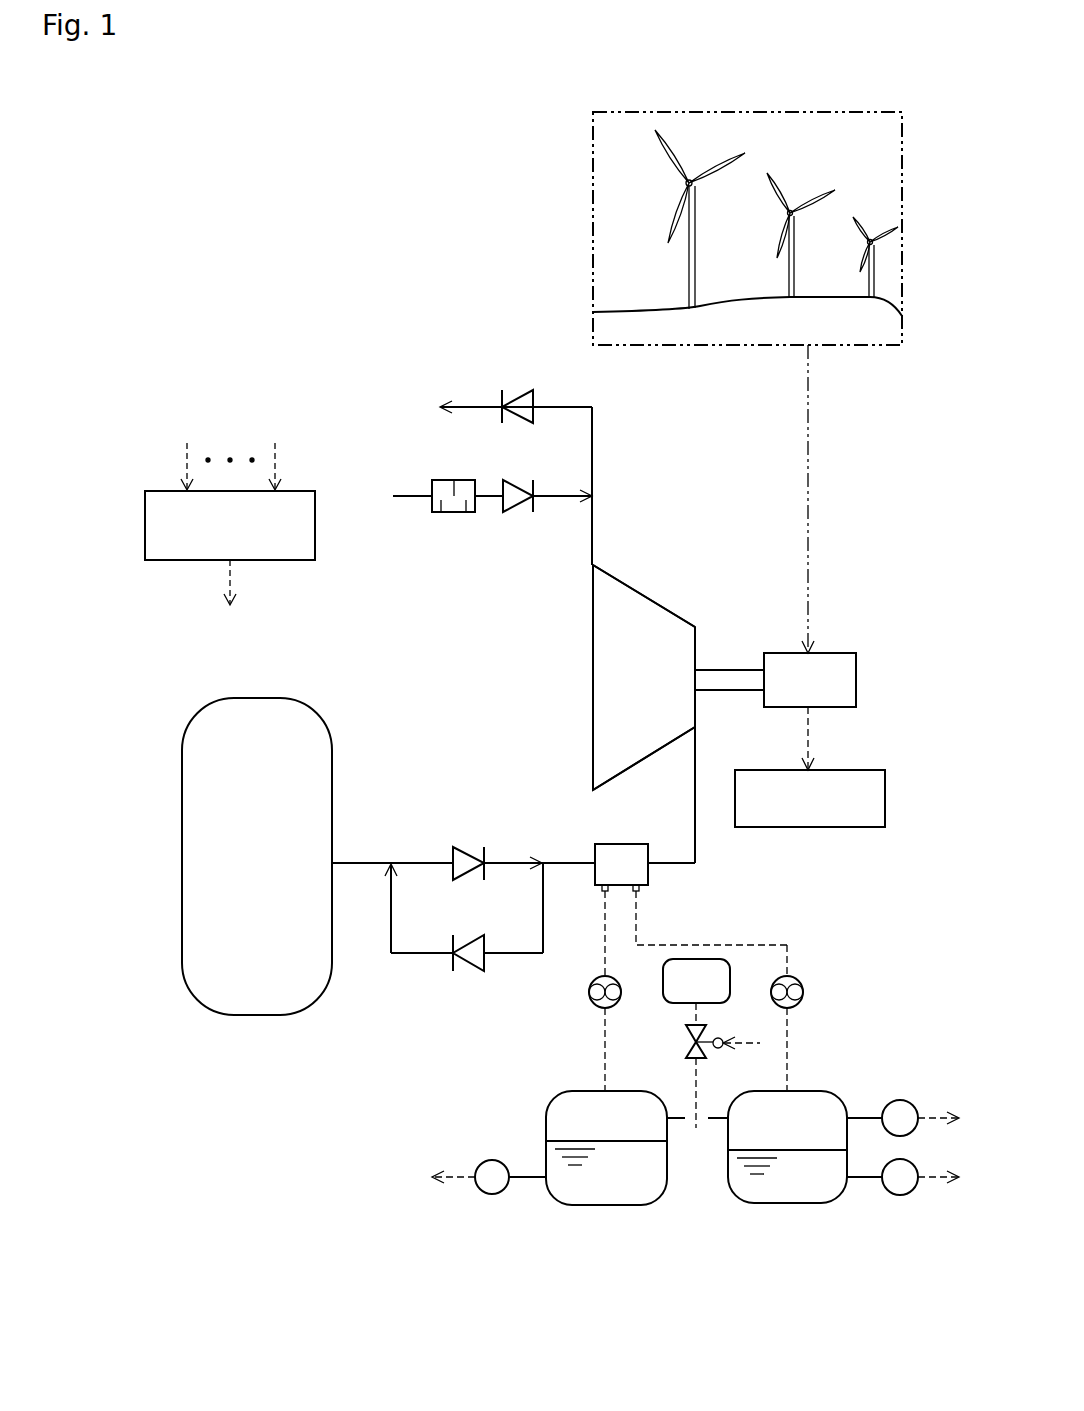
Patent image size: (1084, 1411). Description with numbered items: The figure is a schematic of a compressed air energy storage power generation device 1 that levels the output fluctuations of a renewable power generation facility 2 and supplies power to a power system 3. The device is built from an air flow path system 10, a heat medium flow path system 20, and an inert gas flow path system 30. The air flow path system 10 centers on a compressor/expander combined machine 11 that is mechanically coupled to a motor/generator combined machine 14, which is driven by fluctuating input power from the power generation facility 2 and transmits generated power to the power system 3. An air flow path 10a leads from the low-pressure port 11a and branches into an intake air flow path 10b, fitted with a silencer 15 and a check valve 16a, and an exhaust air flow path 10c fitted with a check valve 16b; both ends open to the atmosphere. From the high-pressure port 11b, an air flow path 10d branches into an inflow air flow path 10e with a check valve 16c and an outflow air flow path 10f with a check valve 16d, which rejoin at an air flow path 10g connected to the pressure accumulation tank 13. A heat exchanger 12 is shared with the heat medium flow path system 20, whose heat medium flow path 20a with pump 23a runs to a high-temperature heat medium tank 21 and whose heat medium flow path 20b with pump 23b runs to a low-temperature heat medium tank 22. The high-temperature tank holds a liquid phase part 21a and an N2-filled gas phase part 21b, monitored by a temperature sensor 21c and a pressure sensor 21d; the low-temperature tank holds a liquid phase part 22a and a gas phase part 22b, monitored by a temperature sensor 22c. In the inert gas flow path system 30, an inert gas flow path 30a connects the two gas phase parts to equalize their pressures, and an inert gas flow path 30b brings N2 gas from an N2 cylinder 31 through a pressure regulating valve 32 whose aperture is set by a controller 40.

The compressed air energy storage power generation device 1 is at (290, 330).
The power generation facility 2 is at (592, 178).
The power system 3 is at (810, 828).
The air flow path system 10 is at (627, 479).
The air flow path 10a is at (592, 525).
The air flow path for intake 10b is at (408, 510).
The air flow path for exhaust 10c is at (455, 405).
The air flow path 10d is at (695, 852).
The air flow path 10e is at (512, 863).
The air flow path 10f is at (394, 953).
The air flow path 10g is at (372, 863).
The compressor/expander combined machine 11 is at (593, 695).
The low-pressure port 11a is at (593, 565).
The high-pressure port 11b is at (695, 727).
The heat exchanger 12 is at (620, 844).
The pressure accumulation tank 13 is at (250, 1015).
The motor/generator combined machine 14 is at (856, 665).
The silencer 15 is at (432, 482).
The check valve 16a is at (512, 482).
The check valve 16b is at (513, 392).
The check valve 16c is at (448, 848).
The check valve 16d is at (484, 960).
The heat medium flow path system 20 is at (808, 1027).
The heat medium flow path 20a is at (790, 1050).
The heat medium flow path 20b is at (603, 1070).
The high-temperature heat medium tank 21 is at (838, 1200).
The liquid phase part 21a is at (785, 1187).
The gas phase part 21b is at (747, 1130).
The temperature sensor 21c is at (900, 1195).
The pressure sensor 21d is at (905, 1100).
The low-temperature heat medium tank 22 is at (553, 1200).
The liquid phase part 22a is at (602, 1187).
The gas phase part 22b is at (567, 1127).
The temperature sensor 22c is at (487, 1195).
The pump 23a is at (805, 994).
The pump 23b is at (592, 1000).
The inert gas flow path system 30 is at (693, 1128).
The inert gas flow path 30a is at (680, 1116).
The inert gas flow path 30b is at (692, 1015).
The N2 cylinder 31 is at (730, 990).
The pressure regulating valve 32 is at (722, 1050).
The controller 40 is at (315, 491).